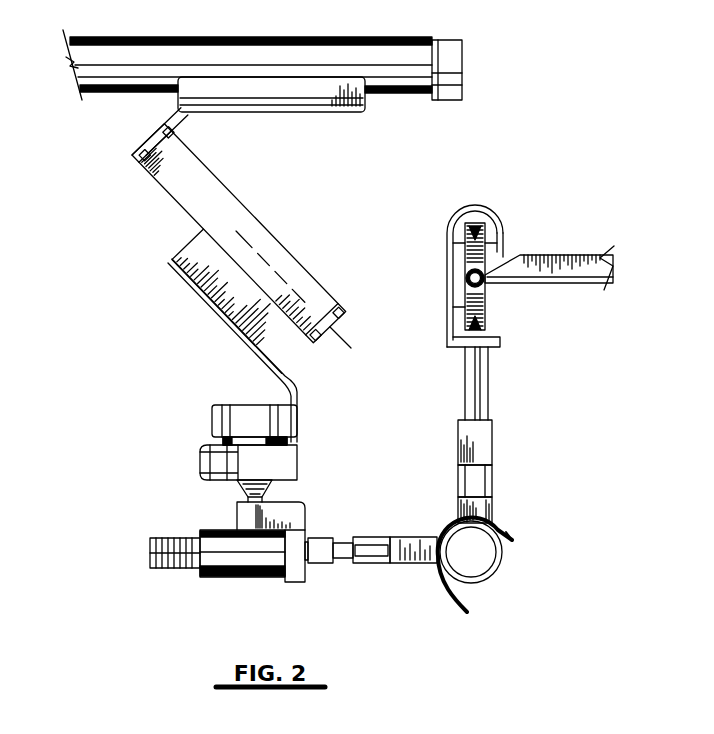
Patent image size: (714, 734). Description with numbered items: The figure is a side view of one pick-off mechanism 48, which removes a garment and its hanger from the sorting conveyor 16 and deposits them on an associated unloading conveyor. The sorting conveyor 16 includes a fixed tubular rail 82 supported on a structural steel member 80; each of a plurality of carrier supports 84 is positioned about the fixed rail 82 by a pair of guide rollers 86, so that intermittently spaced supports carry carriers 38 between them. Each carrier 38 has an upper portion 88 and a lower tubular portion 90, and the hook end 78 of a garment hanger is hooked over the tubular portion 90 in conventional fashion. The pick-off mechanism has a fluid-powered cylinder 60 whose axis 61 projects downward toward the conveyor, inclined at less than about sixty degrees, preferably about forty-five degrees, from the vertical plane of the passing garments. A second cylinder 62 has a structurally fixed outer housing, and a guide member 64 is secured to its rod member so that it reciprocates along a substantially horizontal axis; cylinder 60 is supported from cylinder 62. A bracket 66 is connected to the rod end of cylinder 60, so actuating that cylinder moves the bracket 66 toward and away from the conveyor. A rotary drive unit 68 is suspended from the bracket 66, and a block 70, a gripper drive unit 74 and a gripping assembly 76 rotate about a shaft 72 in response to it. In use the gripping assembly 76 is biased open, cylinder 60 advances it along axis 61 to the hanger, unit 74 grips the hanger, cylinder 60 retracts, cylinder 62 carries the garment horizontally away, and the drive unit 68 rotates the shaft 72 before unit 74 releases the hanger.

The cylinder 62 is at (113, 78).
The guide member 64 is at (287, 88).
The fluid-powered cylinder 60 is at (197, 203).
The axis 61 is at (351, 348).
The bracket 66 is at (283, 370).
The pick-off mechanism 48 is at (160, 347).
The rotary drive unit 68 is at (285, 465).
The shaft 72 is at (250, 496).
The block 70 is at (238, 513).
The gripper drive unit 74 is at (220, 582).
The gripping assembly 76 is at (402, 563).
The hook end 78 is at (470, 598).
The lower tubular portion 90 is at (501, 563).
The carrier 38 is at (502, 487).
The upper portion 88 is at (486, 440).
The carrier support 84 is at (452, 222).
The sorting conveyor 16 is at (504, 256).
The guide roller 86 is at (467, 252).
The fixed tubular rail 82 is at (486, 286).
The structural steel member 80 is at (563, 260).